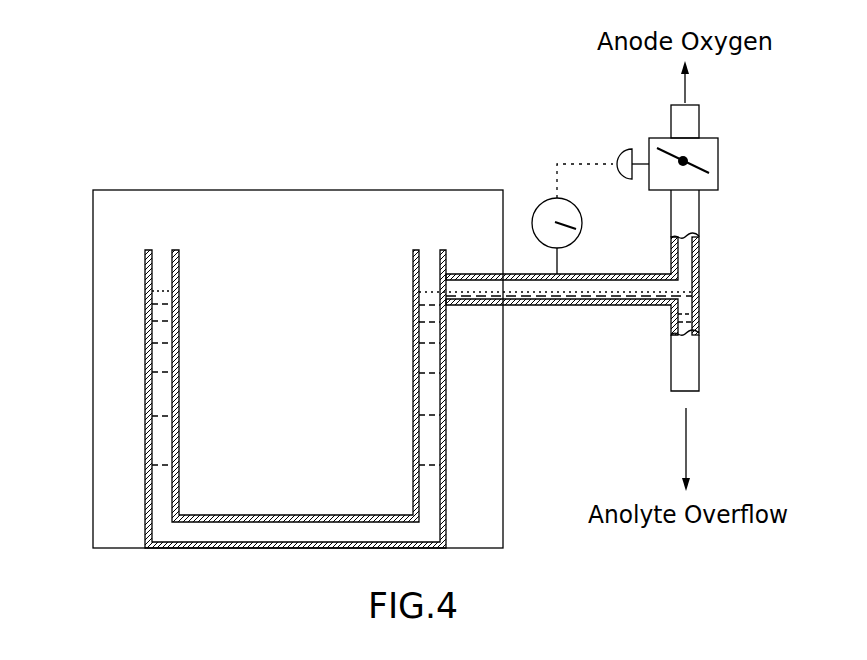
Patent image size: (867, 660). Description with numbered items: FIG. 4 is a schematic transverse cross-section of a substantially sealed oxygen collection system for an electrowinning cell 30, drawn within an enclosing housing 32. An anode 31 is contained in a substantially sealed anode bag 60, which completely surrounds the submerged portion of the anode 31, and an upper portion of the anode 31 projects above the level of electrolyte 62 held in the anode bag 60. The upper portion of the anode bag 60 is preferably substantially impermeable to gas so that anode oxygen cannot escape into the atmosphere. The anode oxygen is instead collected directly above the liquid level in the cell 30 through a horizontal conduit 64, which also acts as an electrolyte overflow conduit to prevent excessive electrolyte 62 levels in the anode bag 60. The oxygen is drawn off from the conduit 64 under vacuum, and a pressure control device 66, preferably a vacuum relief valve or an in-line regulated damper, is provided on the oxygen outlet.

The electrowinning cell 30 is at (145, 300).
The anode 31 is at (192, 383).
The anode chamber housing 32 is at (90, 170).
The anode bag 60 is at (428, 258).
The electrolyte 62 is at (435, 449).
The horizontal conduit 64 is at (587, 275).
The pressure control device 66 is at (720, 162).